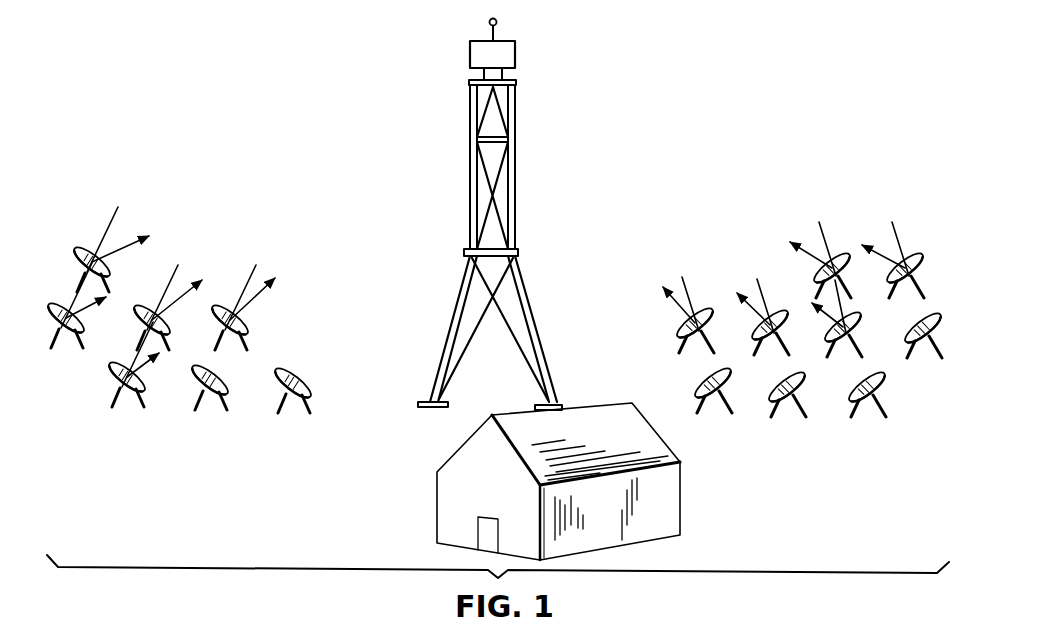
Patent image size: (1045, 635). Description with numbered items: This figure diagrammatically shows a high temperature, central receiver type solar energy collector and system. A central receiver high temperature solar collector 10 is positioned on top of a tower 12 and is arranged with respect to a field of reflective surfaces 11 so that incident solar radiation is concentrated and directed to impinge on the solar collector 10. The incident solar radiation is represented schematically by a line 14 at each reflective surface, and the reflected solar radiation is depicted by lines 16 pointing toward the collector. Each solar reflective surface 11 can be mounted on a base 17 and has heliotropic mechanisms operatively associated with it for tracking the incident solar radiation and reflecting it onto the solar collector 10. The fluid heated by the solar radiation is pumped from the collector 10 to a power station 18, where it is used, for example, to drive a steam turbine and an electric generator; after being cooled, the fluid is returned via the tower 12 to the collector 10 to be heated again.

The central receiver high temperature solar collector 10 is at (507, 52).
The reflective surfaces 11 is at (80, 248).
The tower 12 is at (517, 178).
The incident solar radiation 14 is at (106, 234).
The reflected solar radiation 16 is at (118, 250).
The base 17 is at (217, 345).
The power station 18 is at (455, 492).